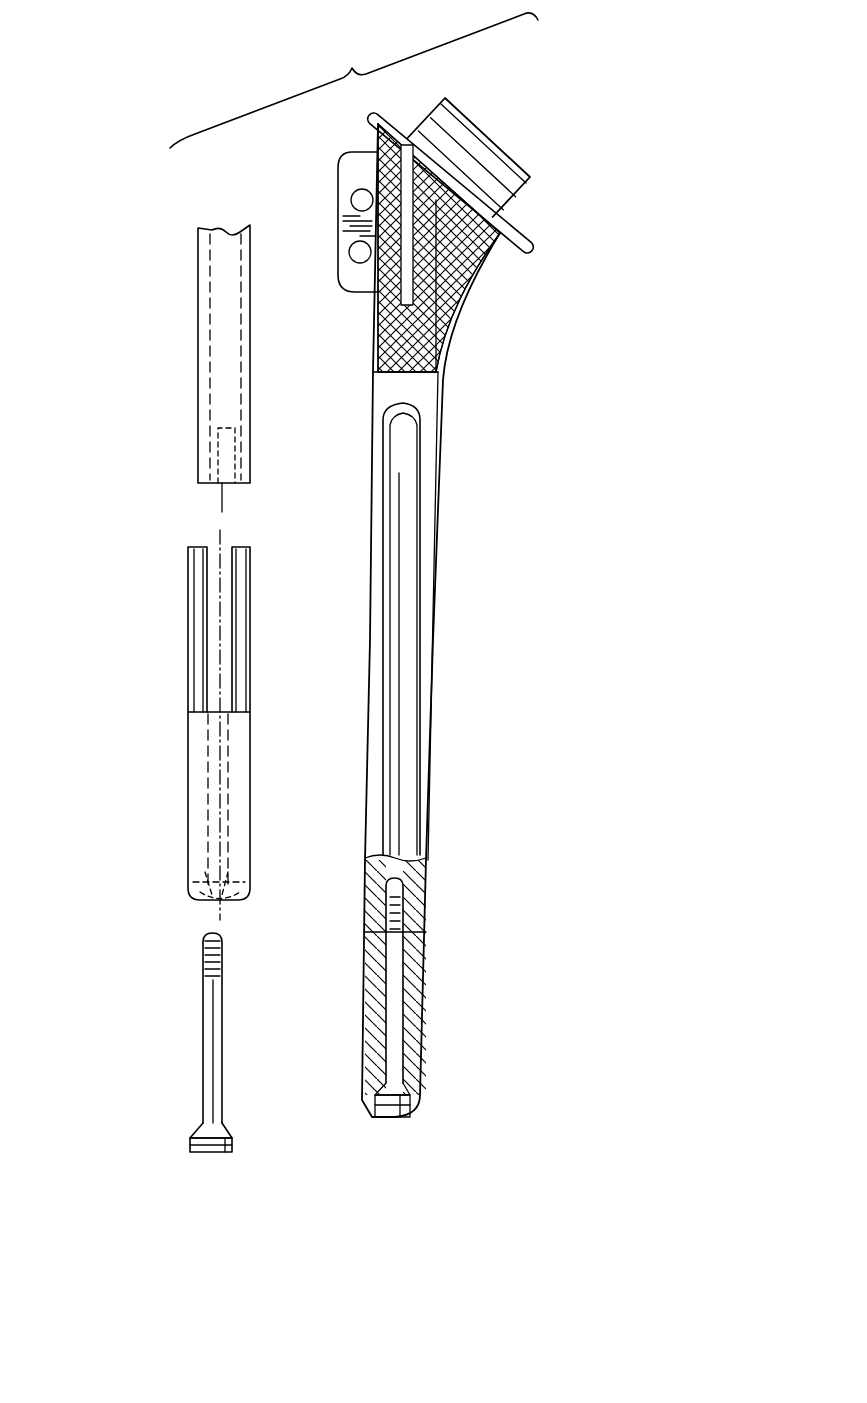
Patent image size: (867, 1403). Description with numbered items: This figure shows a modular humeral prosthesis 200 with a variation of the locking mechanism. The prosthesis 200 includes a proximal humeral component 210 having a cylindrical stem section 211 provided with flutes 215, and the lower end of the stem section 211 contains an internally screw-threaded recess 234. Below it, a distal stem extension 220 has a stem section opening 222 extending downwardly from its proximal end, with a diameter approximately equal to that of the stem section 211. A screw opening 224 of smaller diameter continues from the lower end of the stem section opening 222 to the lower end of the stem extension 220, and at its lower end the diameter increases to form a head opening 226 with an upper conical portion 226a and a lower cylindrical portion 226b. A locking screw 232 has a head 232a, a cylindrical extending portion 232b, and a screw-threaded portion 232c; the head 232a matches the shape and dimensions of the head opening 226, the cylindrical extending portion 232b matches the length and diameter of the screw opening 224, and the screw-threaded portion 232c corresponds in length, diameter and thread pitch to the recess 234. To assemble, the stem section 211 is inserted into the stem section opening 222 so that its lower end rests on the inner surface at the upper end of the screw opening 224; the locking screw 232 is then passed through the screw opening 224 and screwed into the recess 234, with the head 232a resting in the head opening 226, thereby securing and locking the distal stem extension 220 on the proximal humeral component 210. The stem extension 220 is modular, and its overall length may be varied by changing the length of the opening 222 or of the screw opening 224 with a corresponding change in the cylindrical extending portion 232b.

The prosthesis 200 is at (458, 597).
The proximal humeral component 210 is at (434, 455).
The cylindrical stem section 211 is at (198, 398).
The flutes 215 is at (232, 307).
The internally screw-threaded recess 234 is at (200, 489).
The distal stem extension 220 is at (188, 733).
The stem section opening 222 is at (205, 622).
The screw opening 224 is at (212, 797).
The head opening 226 is at (245, 892).
The upper conical portion 226a is at (205, 872).
The lower cylindrical portion 226b is at (200, 905).
The locking screw 232 is at (203, 1038).
The head 232a is at (192, 1140).
The cylindrical extending portion 232b is at (210, 1093).
The screw-threaded portion 232c is at (203, 950).